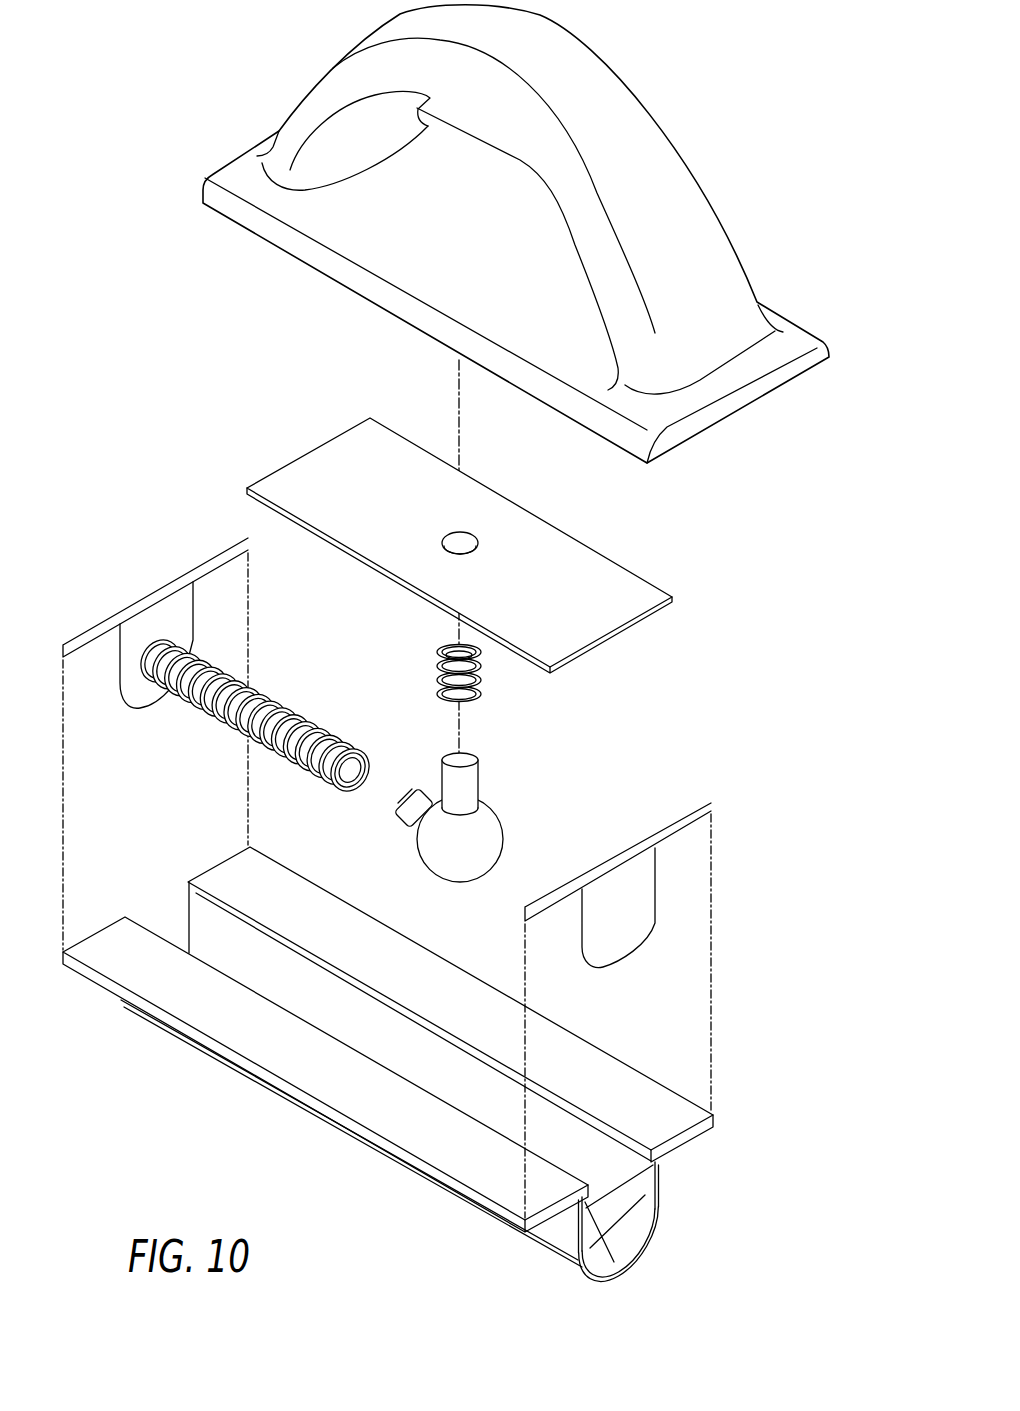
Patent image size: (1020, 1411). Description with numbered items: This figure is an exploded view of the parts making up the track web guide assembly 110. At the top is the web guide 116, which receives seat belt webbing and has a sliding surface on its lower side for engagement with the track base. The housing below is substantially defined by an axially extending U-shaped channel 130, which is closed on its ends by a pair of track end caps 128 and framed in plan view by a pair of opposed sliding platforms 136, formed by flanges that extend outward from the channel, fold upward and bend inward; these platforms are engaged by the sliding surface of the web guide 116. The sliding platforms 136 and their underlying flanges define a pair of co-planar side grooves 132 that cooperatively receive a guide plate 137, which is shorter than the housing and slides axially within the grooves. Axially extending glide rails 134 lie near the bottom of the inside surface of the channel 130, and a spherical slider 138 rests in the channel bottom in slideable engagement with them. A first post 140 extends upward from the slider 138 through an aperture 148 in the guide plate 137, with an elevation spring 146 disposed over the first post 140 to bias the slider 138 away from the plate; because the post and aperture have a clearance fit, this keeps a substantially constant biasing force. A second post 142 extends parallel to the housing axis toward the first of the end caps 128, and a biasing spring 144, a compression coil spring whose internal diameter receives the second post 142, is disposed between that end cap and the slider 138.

The track web guide assembly 110 is at (144, 60).
The web guide 116 is at (695, 175).
The track end caps 128 is at (172, 583).
The U-shaped channel 130 is at (645, 1247).
The side grooves 132 is at (698, 1130).
The glide rails 134 is at (597, 1250).
The sliding platforms 136 is at (223, 878).
The guide plate 137 is at (617, 636).
The slider 138 is at (503, 838).
The first post 140 is at (481, 788).
The second post 142 is at (412, 818).
The biasing spring 144 is at (298, 713).
The elevation spring 146 is at (483, 690).
The aperture 148 is at (472, 533).